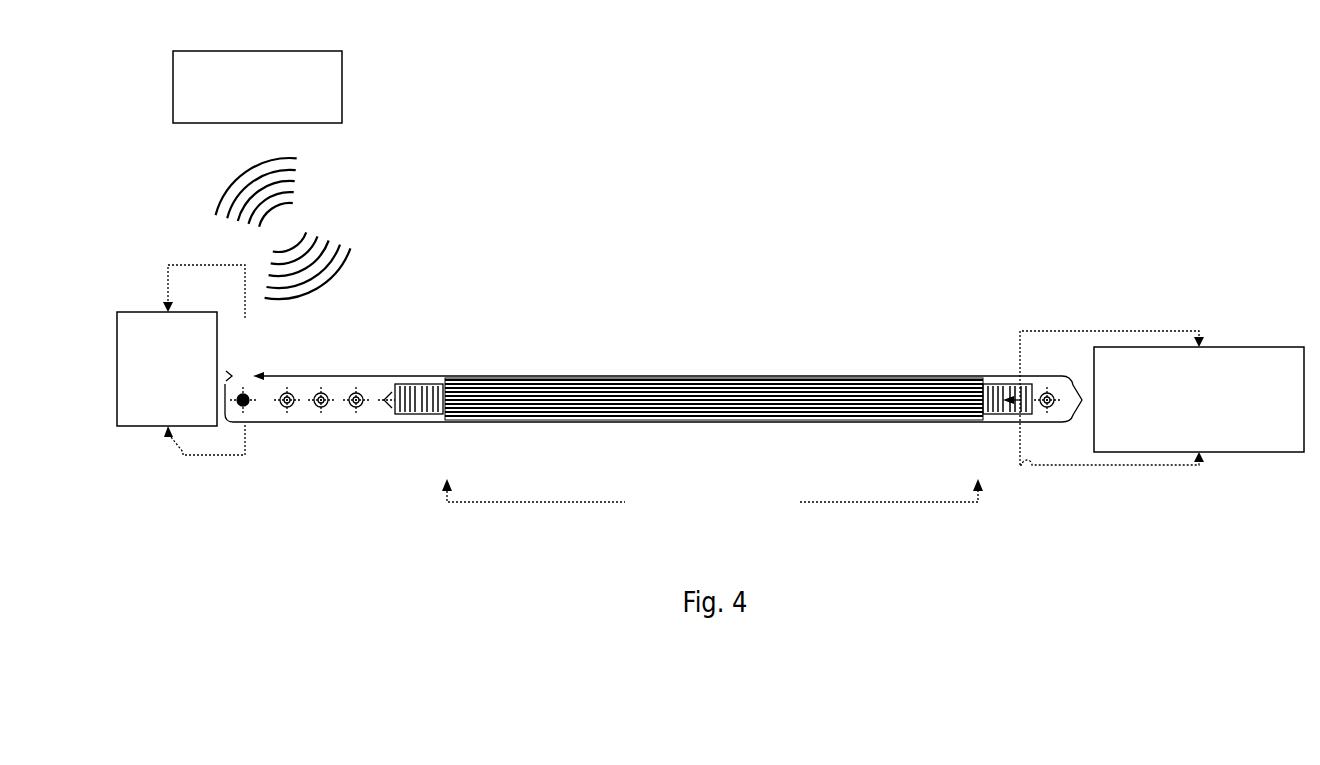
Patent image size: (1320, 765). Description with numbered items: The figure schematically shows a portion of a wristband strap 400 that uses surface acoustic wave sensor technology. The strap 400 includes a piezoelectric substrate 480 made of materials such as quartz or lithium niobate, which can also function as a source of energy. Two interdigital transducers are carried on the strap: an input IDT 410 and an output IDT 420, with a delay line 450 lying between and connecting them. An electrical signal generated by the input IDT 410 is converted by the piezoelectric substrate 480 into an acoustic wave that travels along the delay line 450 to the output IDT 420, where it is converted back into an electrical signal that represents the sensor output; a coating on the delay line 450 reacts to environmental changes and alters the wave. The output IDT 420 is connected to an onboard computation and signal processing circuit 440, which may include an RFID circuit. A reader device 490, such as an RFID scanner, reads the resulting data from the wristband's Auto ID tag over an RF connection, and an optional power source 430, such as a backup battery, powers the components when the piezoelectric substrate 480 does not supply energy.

The strap 400 is at (653, 263).
The input interdigital transducer 410 is at (373, 488).
The output interdigital transducer 420 is at (1002, 488).
The power source 430 is at (181, 360).
The onboard computation and signal processing circuit 440 is at (1153, 398).
The delay line 450 is at (712, 352).
The piezoelectric substrate 480 is at (724, 301).
The reader device 490 is at (261, 175).